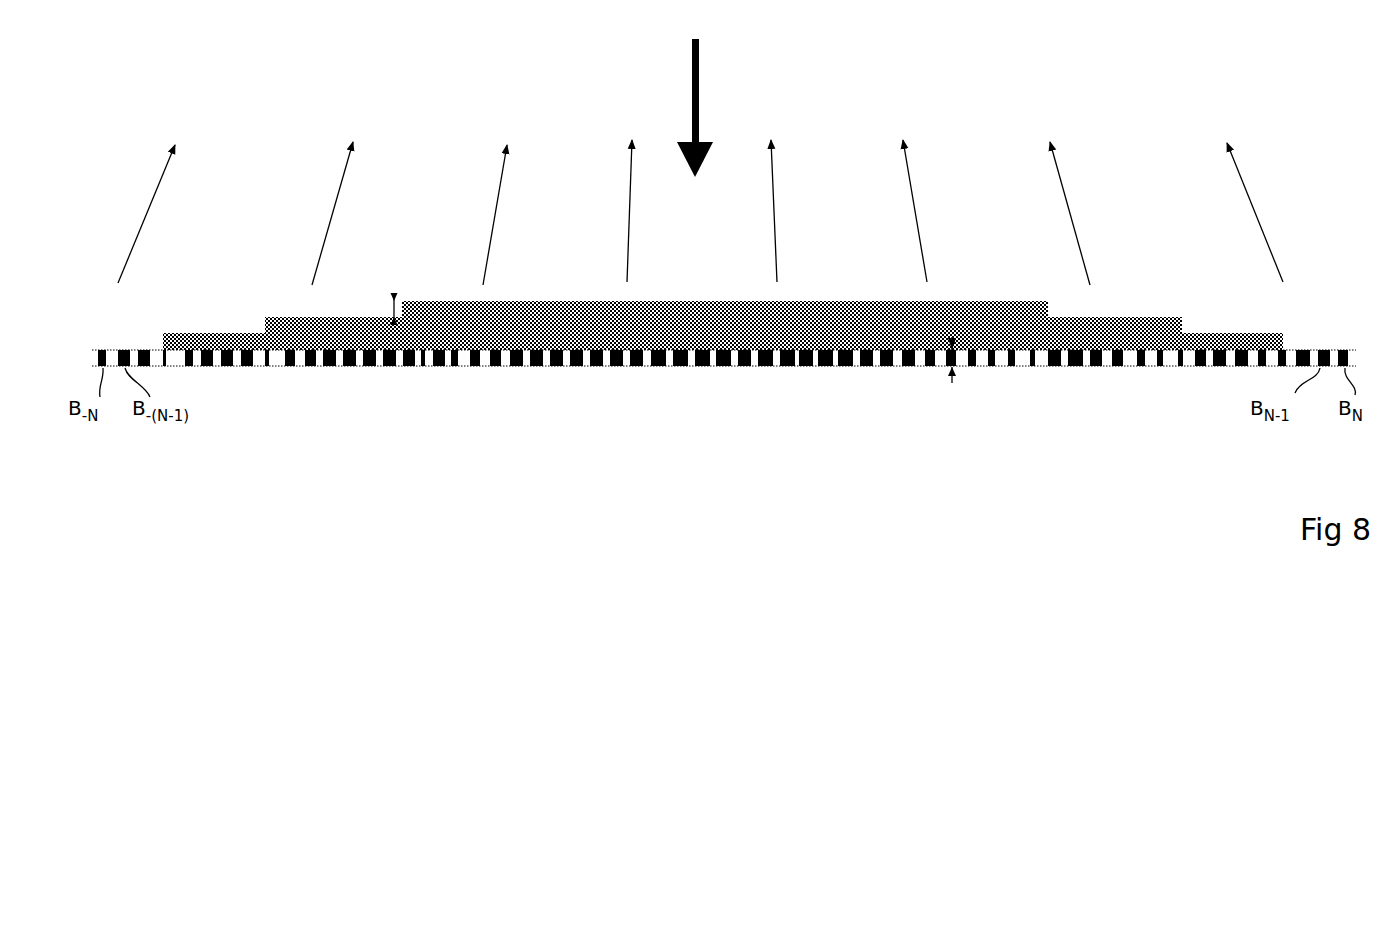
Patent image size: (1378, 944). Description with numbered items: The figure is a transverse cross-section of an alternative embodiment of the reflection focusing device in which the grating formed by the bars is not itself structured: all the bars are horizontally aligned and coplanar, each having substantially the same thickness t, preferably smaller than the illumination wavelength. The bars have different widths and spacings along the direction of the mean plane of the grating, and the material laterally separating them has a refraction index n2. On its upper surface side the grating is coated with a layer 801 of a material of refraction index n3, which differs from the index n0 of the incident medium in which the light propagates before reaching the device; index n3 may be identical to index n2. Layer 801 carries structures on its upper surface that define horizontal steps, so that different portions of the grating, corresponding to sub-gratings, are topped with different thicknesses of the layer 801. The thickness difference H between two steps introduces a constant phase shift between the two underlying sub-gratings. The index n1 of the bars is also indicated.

The layer 801 is at (723, 297).
The refraction index of the incident medium n0 is at (557, 282).
The refractive index of grating bars n1 is at (433, 367).
The refraction index of the material laterally separating the bars n2 is at (422, 362).
The refraction index of the layer n3 is at (723, 334).
The thickness difference H is at (379, 308).
The thickness t is at (953, 337).